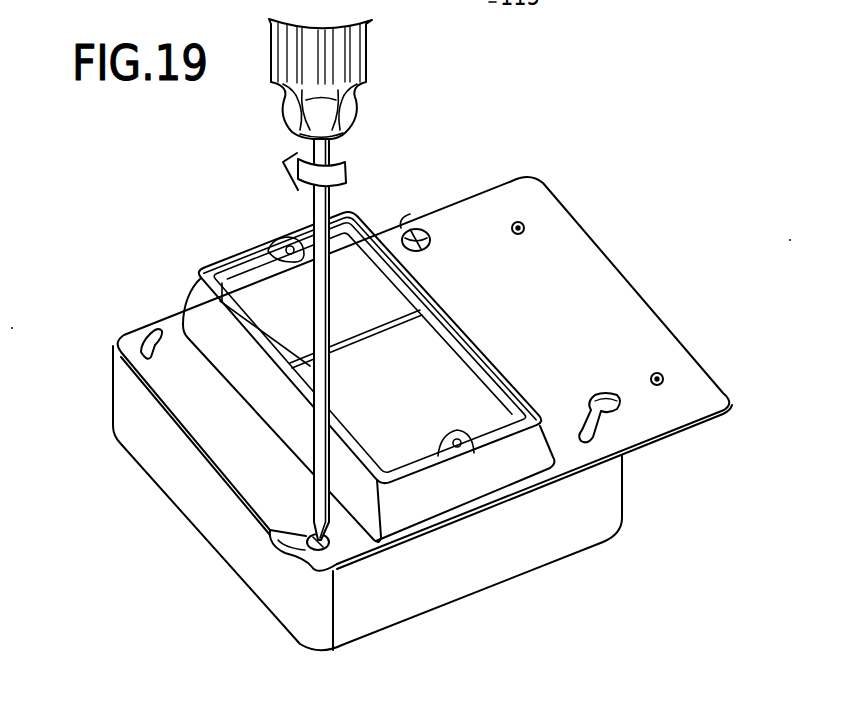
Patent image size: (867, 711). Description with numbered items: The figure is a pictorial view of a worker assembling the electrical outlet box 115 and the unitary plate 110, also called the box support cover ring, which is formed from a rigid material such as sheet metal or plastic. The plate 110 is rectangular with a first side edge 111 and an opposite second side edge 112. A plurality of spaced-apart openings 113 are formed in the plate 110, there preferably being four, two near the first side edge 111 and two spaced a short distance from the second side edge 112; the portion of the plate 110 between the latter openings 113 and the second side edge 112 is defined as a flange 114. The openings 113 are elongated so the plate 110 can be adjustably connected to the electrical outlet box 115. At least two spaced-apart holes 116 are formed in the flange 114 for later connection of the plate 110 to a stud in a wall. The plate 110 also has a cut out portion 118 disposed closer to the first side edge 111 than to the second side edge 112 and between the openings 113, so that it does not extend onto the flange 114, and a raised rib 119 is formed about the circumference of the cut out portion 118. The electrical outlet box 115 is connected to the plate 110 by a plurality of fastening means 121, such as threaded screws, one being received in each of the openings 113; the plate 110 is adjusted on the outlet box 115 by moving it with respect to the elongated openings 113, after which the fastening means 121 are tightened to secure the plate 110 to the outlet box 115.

The unitary plate 110 is at (178, 383).
The first side edge 111 is at (210, 465).
The second side edge 112 is at (667, 318).
The openings 113 is at (150, 337).
The flange 114 is at (587, 303).
The electrical outlet box 115 is at (590, 556).
The holes 116 is at (518, 221).
The cut out portion 118 is at (248, 282).
The raised rib 119 is at (264, 243).
The fastening means 121 is at (421, 228).